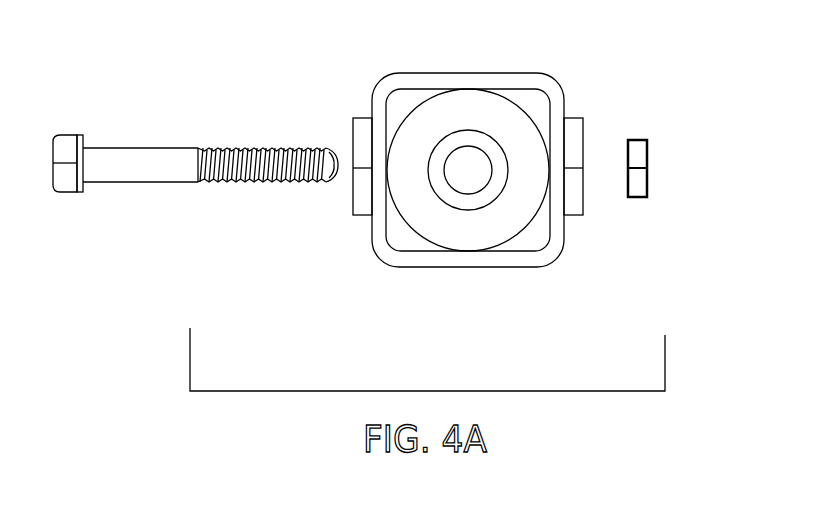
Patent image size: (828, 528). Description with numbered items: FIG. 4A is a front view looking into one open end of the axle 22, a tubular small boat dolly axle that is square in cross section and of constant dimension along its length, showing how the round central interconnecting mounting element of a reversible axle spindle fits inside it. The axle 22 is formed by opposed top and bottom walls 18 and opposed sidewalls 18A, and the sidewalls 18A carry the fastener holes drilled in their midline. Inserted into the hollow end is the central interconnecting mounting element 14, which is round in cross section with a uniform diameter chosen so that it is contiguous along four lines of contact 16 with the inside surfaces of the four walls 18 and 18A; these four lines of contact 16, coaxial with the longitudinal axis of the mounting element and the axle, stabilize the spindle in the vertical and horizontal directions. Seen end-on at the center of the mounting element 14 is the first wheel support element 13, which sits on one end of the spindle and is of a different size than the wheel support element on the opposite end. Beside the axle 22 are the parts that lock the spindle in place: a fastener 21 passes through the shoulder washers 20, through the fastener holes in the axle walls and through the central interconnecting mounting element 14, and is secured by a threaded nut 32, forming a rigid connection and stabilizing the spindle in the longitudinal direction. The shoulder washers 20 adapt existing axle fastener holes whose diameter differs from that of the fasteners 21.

The first wheel support element 13 is at (443, 153).
The central interconnecting mounting element 14 is at (498, 220).
The lines of contact 16 is at (547, 160).
The top and bottom walls 18 is at (441, 82).
The sidewalls 18A is at (555, 112).
The shoulder washers 20 is at (362, 193).
The fasteners 21 is at (138, 168).
The axle 22 is at (362, 44).
The threaded nuts 32 is at (642, 159).